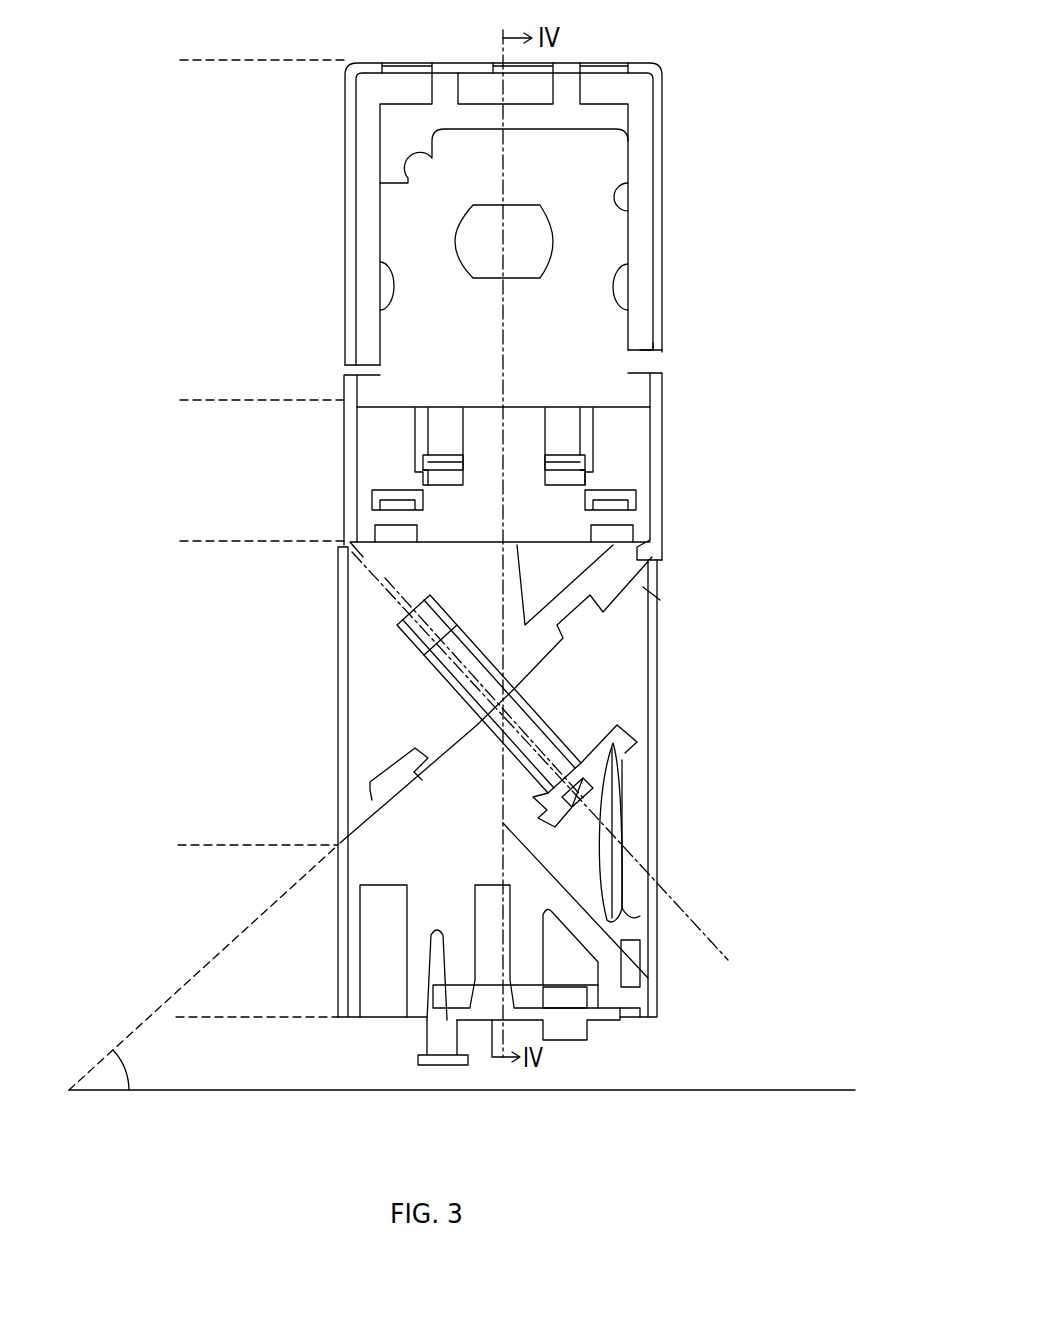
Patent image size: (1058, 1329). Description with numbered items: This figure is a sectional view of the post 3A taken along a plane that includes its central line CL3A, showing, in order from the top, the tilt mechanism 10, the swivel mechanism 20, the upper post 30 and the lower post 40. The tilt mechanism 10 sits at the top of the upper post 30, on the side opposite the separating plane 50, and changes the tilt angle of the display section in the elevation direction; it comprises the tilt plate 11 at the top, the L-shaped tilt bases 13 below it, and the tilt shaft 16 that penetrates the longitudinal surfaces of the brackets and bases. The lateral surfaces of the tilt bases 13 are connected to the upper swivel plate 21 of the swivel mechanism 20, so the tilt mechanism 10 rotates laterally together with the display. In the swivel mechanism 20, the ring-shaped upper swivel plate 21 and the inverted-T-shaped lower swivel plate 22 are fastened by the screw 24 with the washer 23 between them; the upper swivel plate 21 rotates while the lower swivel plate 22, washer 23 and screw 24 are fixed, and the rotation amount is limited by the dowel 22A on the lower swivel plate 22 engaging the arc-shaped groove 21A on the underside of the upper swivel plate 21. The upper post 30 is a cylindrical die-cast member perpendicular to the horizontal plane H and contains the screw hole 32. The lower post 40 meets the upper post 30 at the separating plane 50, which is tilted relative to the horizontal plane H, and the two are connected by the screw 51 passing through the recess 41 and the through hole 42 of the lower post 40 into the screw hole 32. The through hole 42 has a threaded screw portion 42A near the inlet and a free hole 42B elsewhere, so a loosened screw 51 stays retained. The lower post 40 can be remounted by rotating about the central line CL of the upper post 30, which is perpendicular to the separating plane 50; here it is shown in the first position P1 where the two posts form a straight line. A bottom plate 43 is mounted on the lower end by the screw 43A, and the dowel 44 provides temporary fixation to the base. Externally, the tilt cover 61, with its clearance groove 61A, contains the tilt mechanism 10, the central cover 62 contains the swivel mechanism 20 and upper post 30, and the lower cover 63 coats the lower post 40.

The post 3A is at (657, 43).
The tilt mechanism 10 is at (181, 60).
The tilt plate 11 is at (625, 88).
The tilt base 13 is at (605, 155).
The tilt shaft 16 is at (528, 237).
The swivel mechanism 20 is at (181, 402).
The upper swivel plate 21 is at (380, 420).
The arc-shaped groove 21A is at (372, 490).
The lower swivel plate 22 is at (663, 540).
The dowel 22A is at (375, 516).
The washer 23 is at (570, 458).
The screw 24 is at (640, 432).
The upper post 30 is at (181, 545).
The screw hole 32 is at (400, 640).
The lower post 40 is at (181, 847).
The recess 41 is at (640, 907).
The through hole 42 is at (733, 687).
The screw portion 42A is at (610, 745).
The free hole 42B is at (605, 718).
The bottom plate 43 is at (567, 1032).
The screw 43A is at (615, 1012).
The dowel 44 is at (425, 1058).
The separating plane 50 is at (446, 740).
The screw 51 is at (622, 778).
The tilt cover 61 is at (657, 292).
The clearance groove 61A is at (660, 353).
The central cover 62 is at (660, 552).
The lower cover 63 is at (662, 588).
The central line of the upper post CL is at (707, 932).
The central line of the post CL3A is at (500, 653).
The first position P1 is at (707, 852).
The horizontal plane H is at (280, 1097).